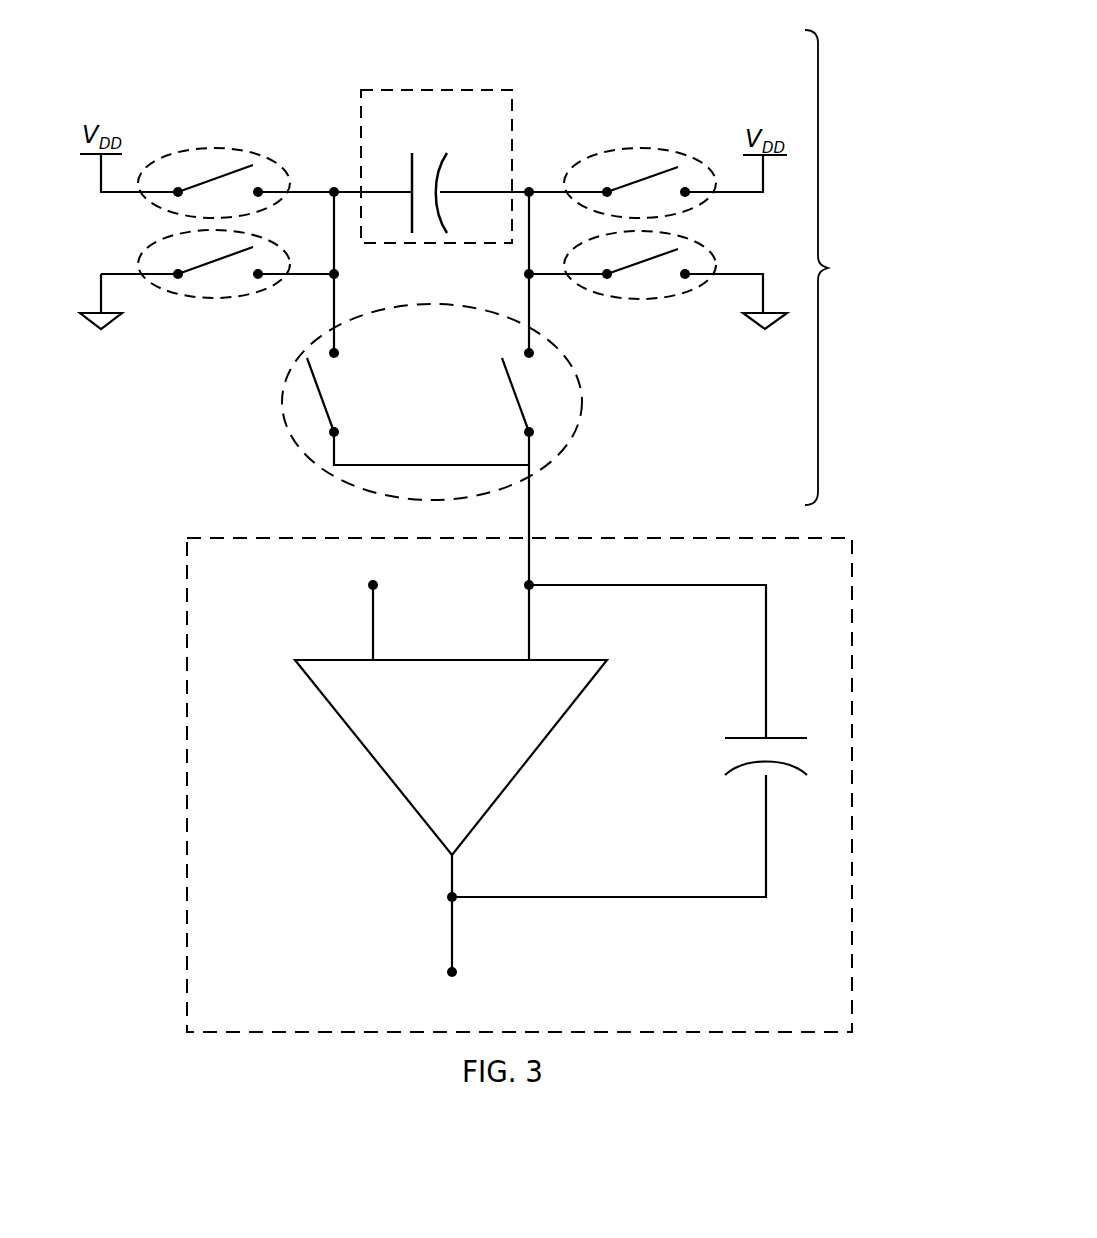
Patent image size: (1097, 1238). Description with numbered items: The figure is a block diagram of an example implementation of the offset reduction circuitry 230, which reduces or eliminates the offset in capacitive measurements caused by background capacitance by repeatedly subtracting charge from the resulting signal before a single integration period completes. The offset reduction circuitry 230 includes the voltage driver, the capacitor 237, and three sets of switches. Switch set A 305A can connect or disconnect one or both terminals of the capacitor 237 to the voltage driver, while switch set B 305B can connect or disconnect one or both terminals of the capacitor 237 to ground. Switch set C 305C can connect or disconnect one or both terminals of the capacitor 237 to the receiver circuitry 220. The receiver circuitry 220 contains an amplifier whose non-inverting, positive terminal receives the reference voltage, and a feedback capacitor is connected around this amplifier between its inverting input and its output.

The switch set A 305A is at (660, 107).
The switch set B 305B is at (212, 300).
The switch set C 305C is at (287, 425).
The capacitor 237 is at (436, 166).
The offset reduction circuitry 230 is at (873, 267).
The receiver circuitry 220 is at (519, 785).